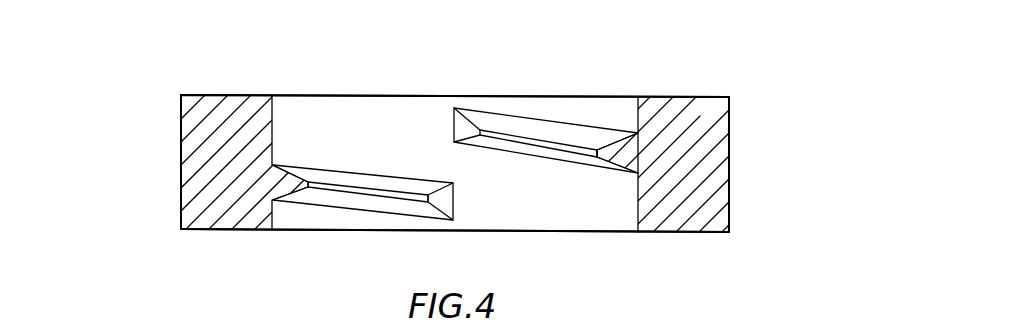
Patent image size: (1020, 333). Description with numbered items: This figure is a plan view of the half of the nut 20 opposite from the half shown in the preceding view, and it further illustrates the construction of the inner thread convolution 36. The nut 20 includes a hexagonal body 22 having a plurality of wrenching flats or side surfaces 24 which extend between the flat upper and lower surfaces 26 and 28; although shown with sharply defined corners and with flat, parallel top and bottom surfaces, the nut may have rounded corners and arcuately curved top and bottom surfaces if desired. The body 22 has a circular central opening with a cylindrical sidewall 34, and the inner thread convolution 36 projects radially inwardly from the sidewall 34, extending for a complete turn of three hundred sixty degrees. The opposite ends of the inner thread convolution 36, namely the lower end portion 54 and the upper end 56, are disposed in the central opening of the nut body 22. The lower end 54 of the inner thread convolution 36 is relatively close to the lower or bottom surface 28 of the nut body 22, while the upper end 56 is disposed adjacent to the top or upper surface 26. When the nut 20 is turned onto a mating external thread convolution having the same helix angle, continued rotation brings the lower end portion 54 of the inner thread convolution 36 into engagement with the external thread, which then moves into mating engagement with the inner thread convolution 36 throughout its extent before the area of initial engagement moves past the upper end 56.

The nut 20 is at (690, 74).
The hexagonal body 22 is at (703, 143).
The wrenching flats or side surfaces 24 is at (180, 158).
The upper surface 26 is at (237, 94).
The lower surface 28 is at (218, 230).
The cylindrical sidewall 34 is at (277, 221).
The inner thread convolution 36 is at (420, 162).
The lower end portion of the inner thread convolution 54 is at (447, 202).
The upper end of the inner thread convolution 56 is at (467, 132).